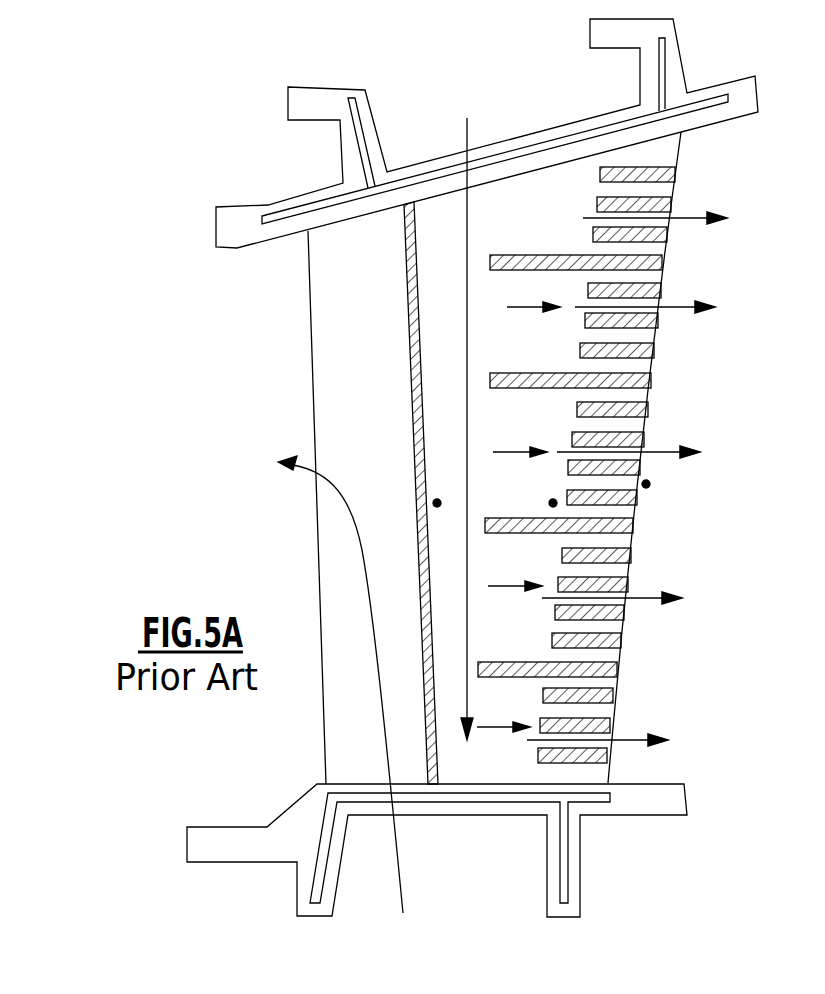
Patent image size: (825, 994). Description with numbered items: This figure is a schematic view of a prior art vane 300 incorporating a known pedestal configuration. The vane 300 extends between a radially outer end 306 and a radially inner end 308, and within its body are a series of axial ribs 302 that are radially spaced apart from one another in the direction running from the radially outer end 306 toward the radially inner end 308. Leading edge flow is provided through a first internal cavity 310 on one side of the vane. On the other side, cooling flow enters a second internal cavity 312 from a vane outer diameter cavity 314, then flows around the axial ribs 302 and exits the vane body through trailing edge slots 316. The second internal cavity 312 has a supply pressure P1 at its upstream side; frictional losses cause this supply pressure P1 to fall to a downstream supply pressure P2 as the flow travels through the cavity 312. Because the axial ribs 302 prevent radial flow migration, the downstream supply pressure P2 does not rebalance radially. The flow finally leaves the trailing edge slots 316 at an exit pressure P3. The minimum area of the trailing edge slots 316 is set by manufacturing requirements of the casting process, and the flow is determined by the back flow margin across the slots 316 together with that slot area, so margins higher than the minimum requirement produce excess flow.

The vane 300 is at (180, 162).
The axial ribs 302 is at (665, 263).
The radially outer end 306 is at (665, 153).
The radially inner end 308 is at (590, 773).
The first internal cavity 310 is at (350, 697).
The second internal cavity 312 is at (440, 230).
The vane outer diameter cavity 314 is at (620, 83).
The trailing edge slots 316 is at (630, 423).
The supply pressure P1 is at (437, 503).
The downstream supply pressure P2 is at (553, 503).
The exit pressure P3 is at (646, 484).